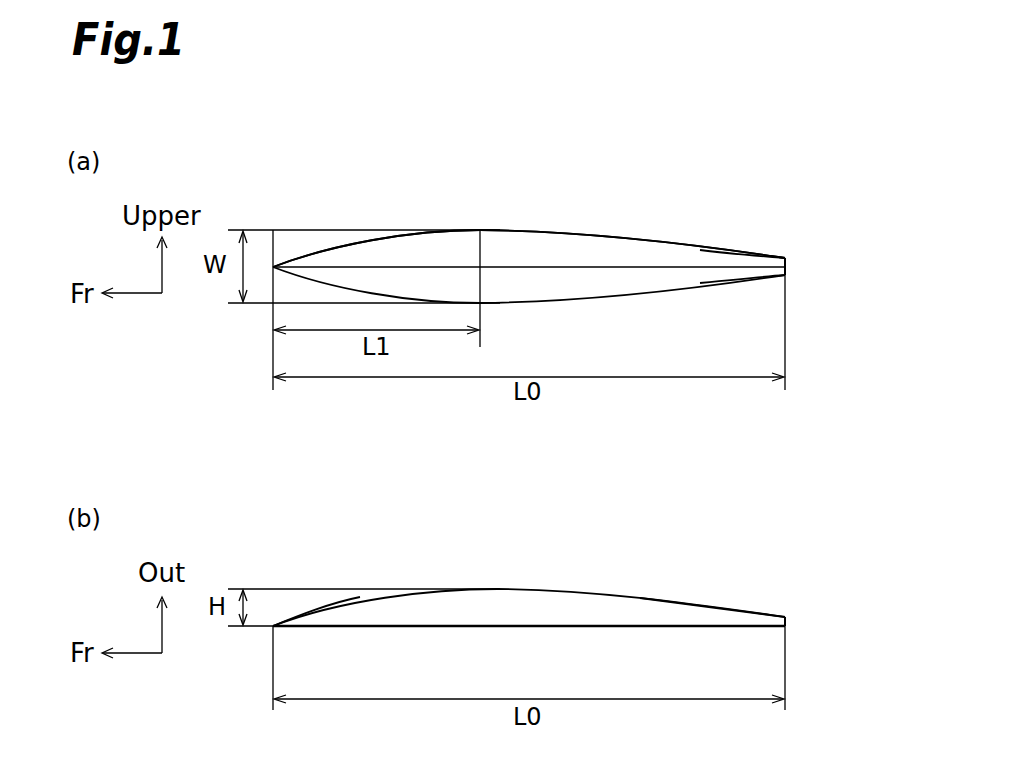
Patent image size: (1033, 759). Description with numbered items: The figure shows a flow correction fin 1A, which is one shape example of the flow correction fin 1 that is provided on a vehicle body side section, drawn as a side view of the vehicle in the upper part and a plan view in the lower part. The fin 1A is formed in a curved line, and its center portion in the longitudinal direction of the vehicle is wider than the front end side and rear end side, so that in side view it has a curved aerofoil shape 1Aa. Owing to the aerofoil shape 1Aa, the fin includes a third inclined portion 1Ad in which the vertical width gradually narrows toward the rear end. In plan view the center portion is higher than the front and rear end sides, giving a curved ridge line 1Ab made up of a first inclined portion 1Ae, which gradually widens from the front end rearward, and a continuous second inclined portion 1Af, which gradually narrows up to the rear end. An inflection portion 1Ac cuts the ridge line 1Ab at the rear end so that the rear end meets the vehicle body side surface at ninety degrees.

The flow correction fin 1 is at (529, 233).
The flow correction fin 1A is at (627, 235).
The aerofoil shape 1Aa is at (510, 303).
The third inclined portion 1Ad is at (709, 284).
The ridge line 1Ab is at (510, 590).
The first inclined portion 1Ae is at (317, 604).
The second inclined portion 1Af is at (708, 607).
The inflection portion 1Ac is at (787, 616).